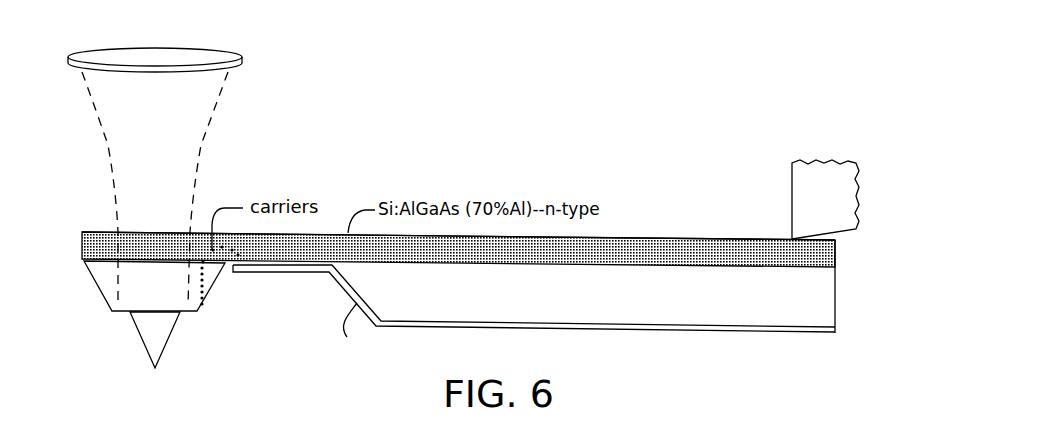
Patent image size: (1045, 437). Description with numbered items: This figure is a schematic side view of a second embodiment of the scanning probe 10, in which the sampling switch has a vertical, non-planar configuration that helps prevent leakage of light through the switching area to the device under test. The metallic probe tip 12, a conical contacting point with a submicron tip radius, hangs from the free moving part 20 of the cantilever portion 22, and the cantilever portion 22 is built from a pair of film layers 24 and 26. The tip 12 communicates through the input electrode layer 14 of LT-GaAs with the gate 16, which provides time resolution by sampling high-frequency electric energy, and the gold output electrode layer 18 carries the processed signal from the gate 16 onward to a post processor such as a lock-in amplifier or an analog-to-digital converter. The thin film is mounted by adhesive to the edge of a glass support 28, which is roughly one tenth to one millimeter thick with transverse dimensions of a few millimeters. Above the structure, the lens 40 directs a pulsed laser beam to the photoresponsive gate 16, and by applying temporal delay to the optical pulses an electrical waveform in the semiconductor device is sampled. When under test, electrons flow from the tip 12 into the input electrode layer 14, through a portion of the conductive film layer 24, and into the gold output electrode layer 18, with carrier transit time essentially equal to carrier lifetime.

The scanning probe 10 is at (549, 104).
The probe tip 12 is at (165, 350).
The input electrode layer 14 is at (100, 288).
The gate 16 is at (225, 274).
The output electrode layer 18 is at (268, 273).
The free moving part 20 is at (82, 248).
The cantilever portion 22 is at (645, 236).
The film layer 24 is at (835, 256).
The film layer 26 is at (835, 307).
The glass support 28 is at (792, 190).
The lens 40 is at (242, 62).